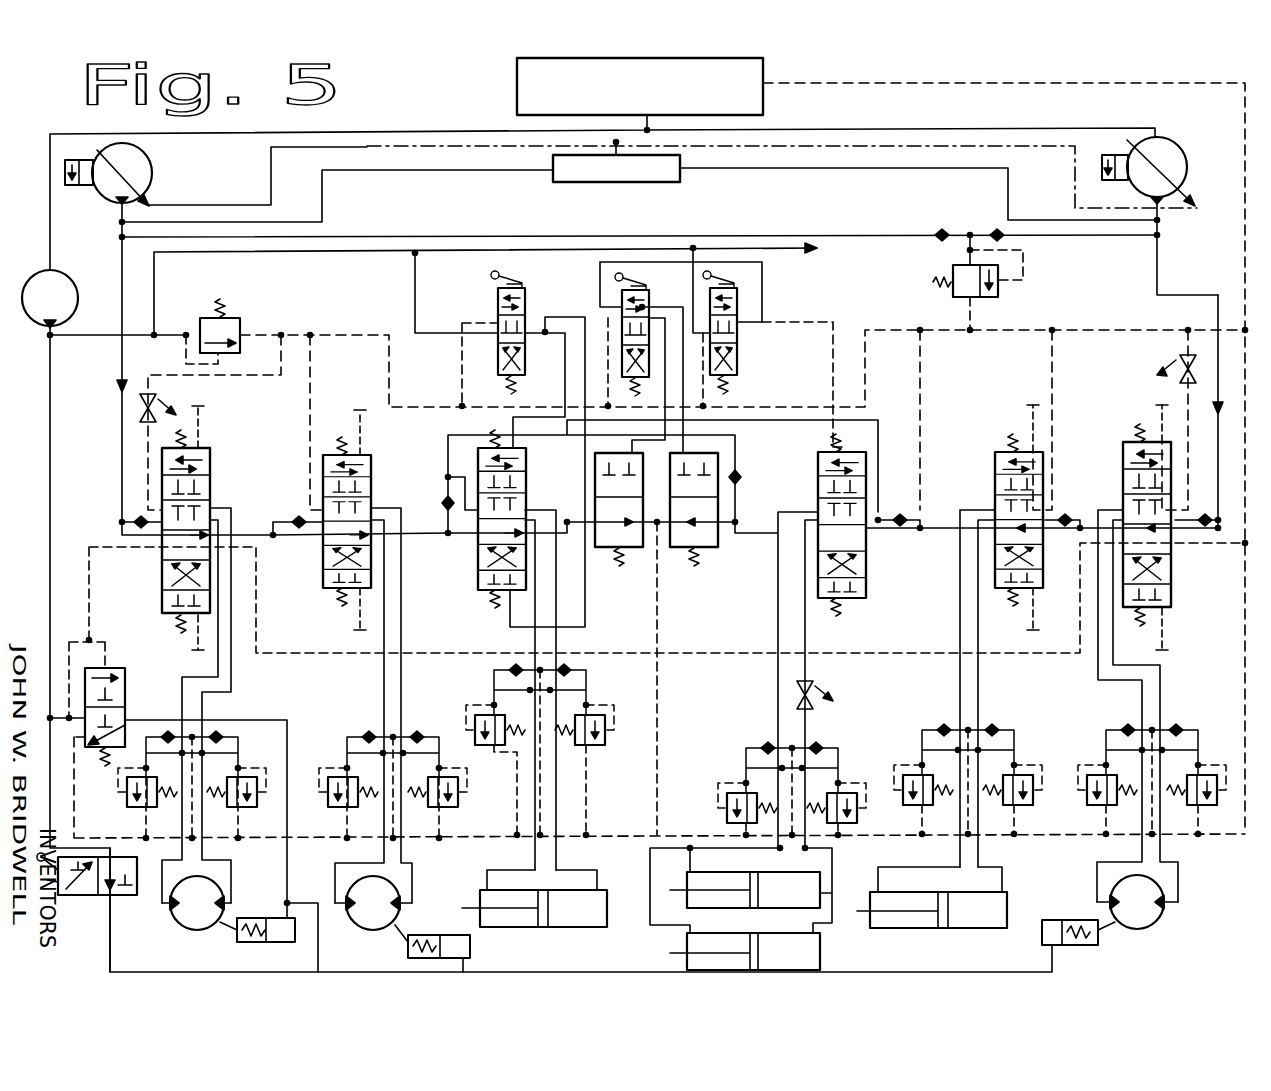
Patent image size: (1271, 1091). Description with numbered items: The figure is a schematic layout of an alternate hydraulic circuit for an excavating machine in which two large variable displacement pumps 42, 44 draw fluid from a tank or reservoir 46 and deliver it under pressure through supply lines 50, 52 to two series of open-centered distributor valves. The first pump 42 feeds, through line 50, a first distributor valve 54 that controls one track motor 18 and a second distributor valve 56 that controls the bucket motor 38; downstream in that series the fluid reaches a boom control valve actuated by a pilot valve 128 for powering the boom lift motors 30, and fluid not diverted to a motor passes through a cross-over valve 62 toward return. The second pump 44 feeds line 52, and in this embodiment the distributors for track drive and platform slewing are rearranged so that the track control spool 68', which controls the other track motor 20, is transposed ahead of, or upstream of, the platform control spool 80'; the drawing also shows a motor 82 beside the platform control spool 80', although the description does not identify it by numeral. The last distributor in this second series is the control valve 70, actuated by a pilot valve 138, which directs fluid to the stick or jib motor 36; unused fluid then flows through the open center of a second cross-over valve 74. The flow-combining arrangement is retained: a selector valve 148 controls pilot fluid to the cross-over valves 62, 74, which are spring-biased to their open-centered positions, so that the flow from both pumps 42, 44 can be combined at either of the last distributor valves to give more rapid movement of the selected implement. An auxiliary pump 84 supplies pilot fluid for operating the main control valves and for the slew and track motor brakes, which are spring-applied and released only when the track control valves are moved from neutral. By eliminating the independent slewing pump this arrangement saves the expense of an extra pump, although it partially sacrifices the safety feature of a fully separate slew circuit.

The track motor 18 is at (1162, 922).
The track motor 20 is at (182, 914).
The boom lift motors 30 is at (822, 935).
The stick or jib motor 36 is at (597, 928).
The bucket motor 38 is at (1008, 906).
The variable displacement pump 42 is at (1174, 137).
The variable displacement pump 44 is at (151, 178).
The tank or reservoir 46 is at (516, 88).
The supply line 50 is at (1214, 296).
The supply line 52 is at (120, 364).
The first distributor valve 54 is at (1125, 476).
The second distributor valve 56 is at (995, 480).
The cross-over valve 62 is at (716, 560).
The track control spool 68' is at (214, 528).
The second distributor valve 70 is at (478, 575).
The cross-over valve 74 is at (598, 560).
The platform control spool 80' is at (375, 520).
The swing motor 82 is at (372, 920).
The auxiliary pump 84 is at (60, 284).
The pilot valve 128 is at (737, 306).
The pilot valve 138 is at (500, 312).
The selector valve 148 is at (622, 308).